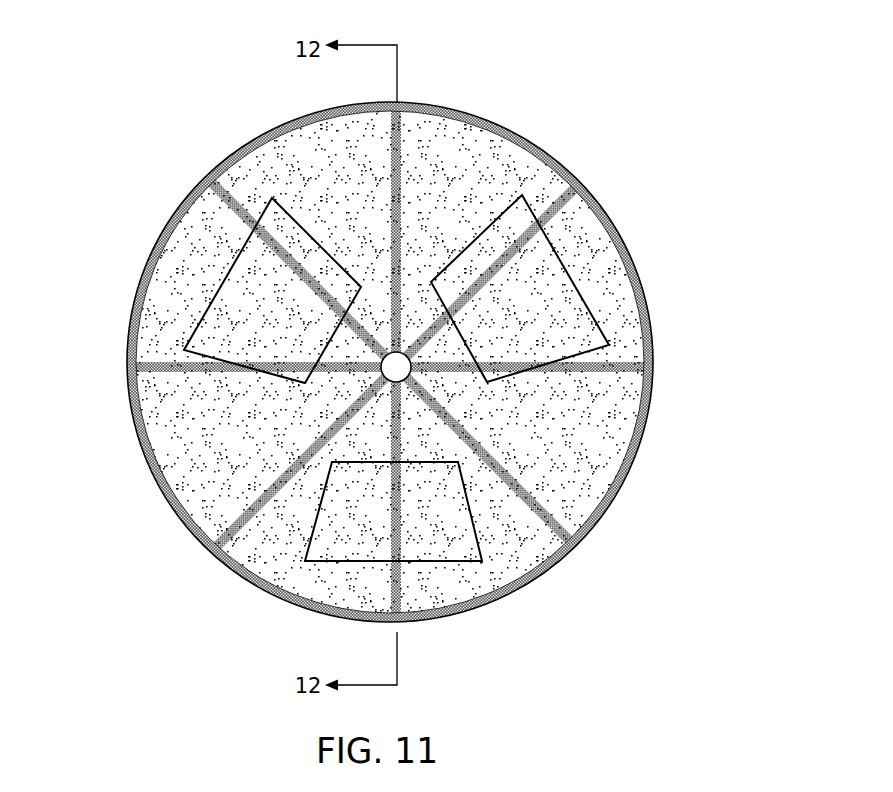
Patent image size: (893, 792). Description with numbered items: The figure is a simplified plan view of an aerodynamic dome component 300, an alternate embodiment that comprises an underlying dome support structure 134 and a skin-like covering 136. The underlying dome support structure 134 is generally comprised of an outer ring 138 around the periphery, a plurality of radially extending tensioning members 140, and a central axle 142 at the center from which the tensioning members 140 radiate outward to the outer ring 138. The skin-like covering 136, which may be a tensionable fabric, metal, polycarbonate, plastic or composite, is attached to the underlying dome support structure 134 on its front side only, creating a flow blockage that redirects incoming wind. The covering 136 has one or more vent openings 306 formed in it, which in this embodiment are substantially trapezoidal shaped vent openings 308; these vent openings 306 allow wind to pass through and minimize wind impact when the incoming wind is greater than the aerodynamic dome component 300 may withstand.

The aerodynamic dome component 300 is at (537, 49).
The underlying dome support structure 134 is at (130, 367).
The skin-like covering 136 is at (543, 163).
The outer ring 138 is at (140, 443).
The radially extending tensioning members 140 is at (232, 538).
The central axle 142 is at (411, 372).
The vent openings 306 is at (227, 274).
The substantially trapezoidal shaped vent openings 308 is at (396, 378).